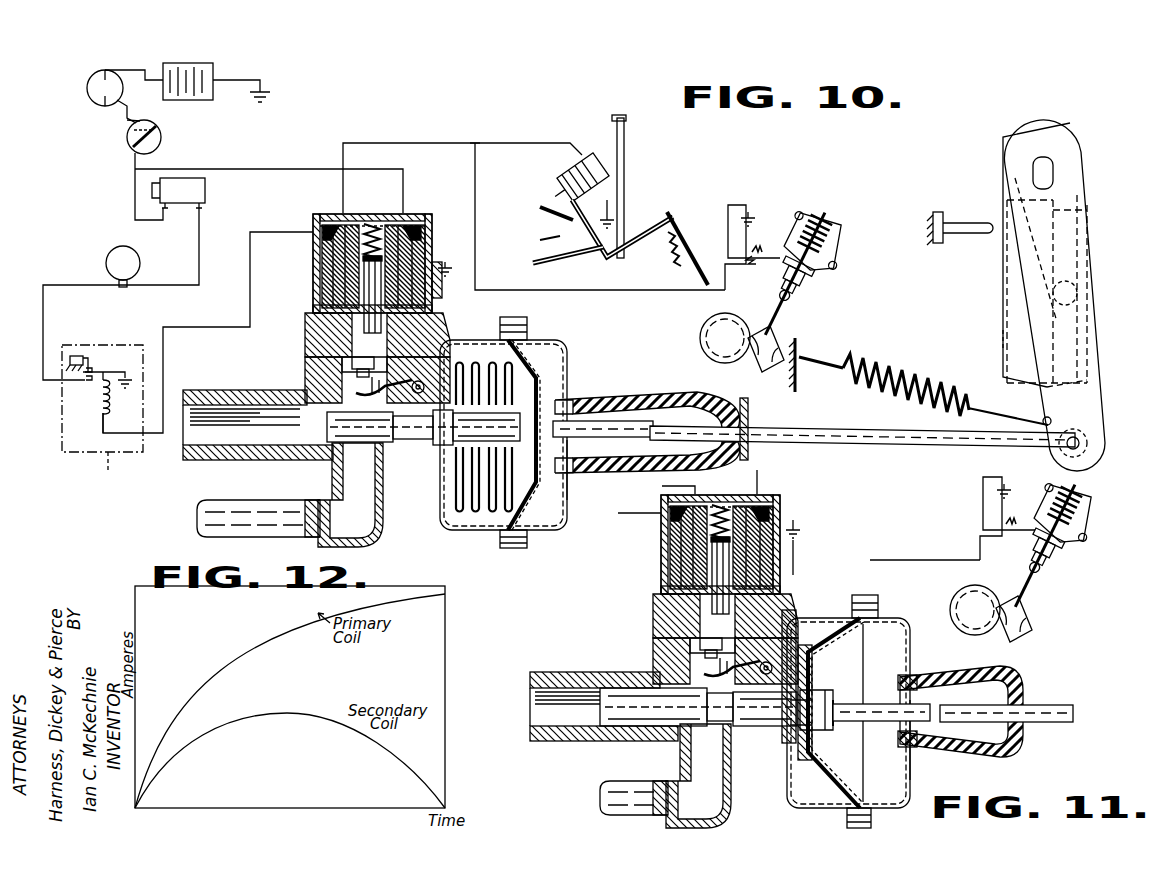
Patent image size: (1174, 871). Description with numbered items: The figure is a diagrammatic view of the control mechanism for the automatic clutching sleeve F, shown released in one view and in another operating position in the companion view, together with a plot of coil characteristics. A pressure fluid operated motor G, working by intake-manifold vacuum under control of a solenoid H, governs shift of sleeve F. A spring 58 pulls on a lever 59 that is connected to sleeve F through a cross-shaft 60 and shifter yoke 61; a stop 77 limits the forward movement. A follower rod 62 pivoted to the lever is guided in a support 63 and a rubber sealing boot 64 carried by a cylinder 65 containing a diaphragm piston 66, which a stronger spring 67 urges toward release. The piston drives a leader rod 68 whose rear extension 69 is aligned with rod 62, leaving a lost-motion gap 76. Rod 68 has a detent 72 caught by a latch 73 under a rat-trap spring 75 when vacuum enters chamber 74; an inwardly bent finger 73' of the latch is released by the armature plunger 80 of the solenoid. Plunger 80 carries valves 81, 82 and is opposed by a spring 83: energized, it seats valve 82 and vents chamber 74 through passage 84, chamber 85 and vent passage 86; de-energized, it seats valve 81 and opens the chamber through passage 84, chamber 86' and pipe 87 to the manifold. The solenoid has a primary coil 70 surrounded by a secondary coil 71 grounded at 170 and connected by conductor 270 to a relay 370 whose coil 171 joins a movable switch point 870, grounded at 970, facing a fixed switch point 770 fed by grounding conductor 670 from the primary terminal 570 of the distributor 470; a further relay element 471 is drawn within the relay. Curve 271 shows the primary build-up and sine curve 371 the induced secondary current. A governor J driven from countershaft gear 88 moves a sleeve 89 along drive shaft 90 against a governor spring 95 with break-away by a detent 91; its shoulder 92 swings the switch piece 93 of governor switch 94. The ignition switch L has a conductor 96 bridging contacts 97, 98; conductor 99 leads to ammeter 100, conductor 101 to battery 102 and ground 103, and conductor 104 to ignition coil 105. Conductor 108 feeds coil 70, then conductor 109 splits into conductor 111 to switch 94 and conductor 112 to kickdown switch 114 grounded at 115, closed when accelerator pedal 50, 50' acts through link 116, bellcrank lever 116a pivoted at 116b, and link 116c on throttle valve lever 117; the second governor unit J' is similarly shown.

In FIG. 10, the accelerator pedal 50 is at (691, 232).
In FIG. 10, the accelerator pedal 50' is at (689, 232).
In FIG. 10, the spring 58 is at (910, 368).
In FIG. 10, the lever 59 is at (1105, 401).
In FIG. 10, the cross-shaft 60 is at (1050, 167).
In FIG. 10, the shifter yoke 61 is at (1005, 291).
In FIG. 10, the follower rod 62 is at (890, 442).
In FIG. 11, the follower rod 62 is at (1055, 708).
In FIG. 10, the support 63 is at (748, 410).
In FIG. 10, the rubber sealing boot 64 is at (658, 392).
In FIG. 11, the rubber sealing boot 64 is at (1025, 675).
In FIG. 10, the cylinder 65 is at (566, 488).
In FIG. 11, the cylinder 65 is at (890, 812).
In FIG. 10, the diaphragm piston 66 is at (540, 343).
In FIG. 11, the diaphragm piston 66 is at (850, 825).
In FIG. 10, the spring 67 is at (500, 535).
In FIG. 11, the spring 67 is at (793, 800).
In FIG. 10, the leader rod 68 is at (383, 480).
In FIG. 11, the leader rod 68 is at (735, 745).
In FIG. 10, the rear extension 69 is at (600, 421).
In FIG. 11, the rear extension 69 is at (882, 707).
In FIG. 10, the primary coil 70 is at (392, 225).
In FIG. 11, the primary coil 70 is at (772, 505).
In FIG. 10, the secondary coil 71 is at (432, 218).
In FIG. 11, the secondary coil 71 is at (781, 500).
In FIG. 10, the detent 72 is at (455, 430).
In FIG. 11, the detent 72 is at (720, 738).
In FIG. 10, the latch 73 is at (384, 406).
In FIG. 11, the latch 73 is at (732, 688).
In FIG. 10, the inwardly bent finger 73' is at (258, 425).
In FIG. 11, the inwardly bent finger 73' is at (604, 695).
In FIG. 10, the chamber 74 is at (455, 515).
In FIG. 11, the chamber 74 is at (822, 800).
In FIG. 10, the rat-trap spring 75 is at (393, 398).
In FIG. 11, the rat-trap spring 75 is at (742, 680).
In FIG. 11, the gap 76 is at (930, 746).
In FIG. 10, the stop 77 is at (965, 222).
In FIG. 10, the armature plunger 80 is at (364, 262).
In FIG. 11, the armature plunger 80 is at (712, 548).
In FIG. 10, the valve 81 is at (360, 288).
In FIG. 11, the valve 81 is at (708, 566).
In FIG. 10, the valve 82 is at (312, 360).
In FIG. 11, the valve 82 is at (788, 615).
In FIG. 10, the spring 83 is at (370, 224).
In FIG. 11, the spring 83 is at (722, 505).
In FIG. 10, the passage 84 is at (425, 362).
In FIG. 11, the passage 84 is at (792, 636).
In FIG. 10, the chamber 85 is at (388, 352).
In FIG. 11, the chamber 85 is at (735, 640).
In FIG. 10, the vent passage 86 is at (360, 334).
In FIG. 11, the vent passage 86 is at (708, 616).
In FIG. 10, the chamber 86' is at (324, 374).
In FIG. 11, the chamber 86' is at (673, 639).
In FIG. 10, the pipe 87 is at (268, 505).
In FIG. 11, the pipe 87 is at (622, 806).
In FIG. 10, the countershaft gear 88 is at (712, 328).
In FIG. 11, the countershaft gear 88 is at (960, 602).
In FIG. 10, the sleeve 89 is at (808, 289).
In FIG. 11, the sleeve 89 is at (1060, 552).
In FIG. 10, the drive shaft 90 is at (790, 326).
In FIG. 11, the drive shaft 90 is at (1035, 606).
In FIG. 10, the detent 91 is at (800, 306).
In FIG. 11, the detent 91 is at (1050, 576).
In FIG. 10, the shoulder 92 is at (818, 267).
In FIG. 11, the shoulder 92 is at (1066, 559).
In FIG. 10, the swinging switch piece 93 is at (775, 244).
In FIG. 10, the governor switch 94 is at (772, 268).
In FIG. 11, the governor switch 94 is at (1015, 542).
In FIG. 10, the governor spring 95 is at (835, 232).
In FIG. 11, the governor spring 95 is at (1098, 501).
In FIG. 10, the conductor 96 is at (161, 139).
In FIG. 10, the contact 97 is at (158, 131).
In FIG. 10, the contact 98 is at (136, 144).
In FIG. 10, the conductor 99 is at (127, 106).
In FIG. 10, the ammeter 100 is at (88, 90).
In FIG. 10, the conductor 101 is at (144, 64).
In FIG. 10, the storage battery 102 is at (183, 63).
In FIG. 10, the ground 103 is at (268, 97).
In FIG. 10, the conductor 104 is at (135, 191).
In FIG. 10, the coil 105 is at (205, 192).
In FIG. 10, the conductor 108 is at (245, 169).
In FIG. 11, the conductor 108 is at (762, 477).
In FIG. 10, the conductor 109 is at (428, 143).
In FIG. 11, the conductor 109 is at (662, 490).
In FIG. 10, the conductor 111 is at (476, 175).
In FIG. 11, the conductor 111 is at (956, 560).
In FIG. 10, the conductor 112 is at (496, 143).
In FIG. 10, the kickdown switch 114 is at (585, 160).
In FIG. 10, the ground 115 is at (612, 217).
In FIG. 10, the link 116 is at (612, 258).
In FIG. 10, the bellcrank lever 116a is at (578, 218).
In FIG. 10, the pivot 116b is at (556, 240).
In FIG. 10, the link 116c is at (556, 262).
In FIG. 10, the throttle valve lever 117 is at (752, 212).
In FIG. 11, the throttle valve lever 117 is at (1030, 476).
In FIG. 10, the ground 170 is at (452, 264).
In FIG. 11, the ground 170 is at (805, 530).
In FIG. 10, the relay coil 171 is at (100, 404).
In FIG. 10, the conductor 270 is at (250, 300).
In FIG. 11, the conductor 270 is at (640, 516).
In FIG. 12, the curve 271 is at (273, 637).
In FIG. 10, the relay 370 is at (110, 466).
In FIG. 12, the curve 371 is at (255, 716).
In FIG. 10, the distributor 470 is at (117, 246).
In FIG. 10, the contact 471 is at (68, 362).
In FIG. 10, the primary terminal 570 is at (127, 288).
In FIG. 10, the grounding conductor 670 is at (50, 290).
In FIG. 10, the fixed switch point 770 is at (96, 386).
In FIG. 10, the movable switch point 870 is at (108, 372).
In FIG. 10, the ground 970 is at (130, 380).
In FIG. 10, the sleeve F is at (1003, 350).
In FIG. 10, the pressure fluid operated motor G is at (538, 340).
In FIG. 11, the pressure fluid operated motor G is at (862, 618).
In FIG. 10, the solenoid H is at (438, 258).
In FIG. 10, the governor J is at (813, 264).
In FIG. 11, the valve unit J' is at (1070, 539).
In FIG. 10, the ignition switch L is at (127, 130).